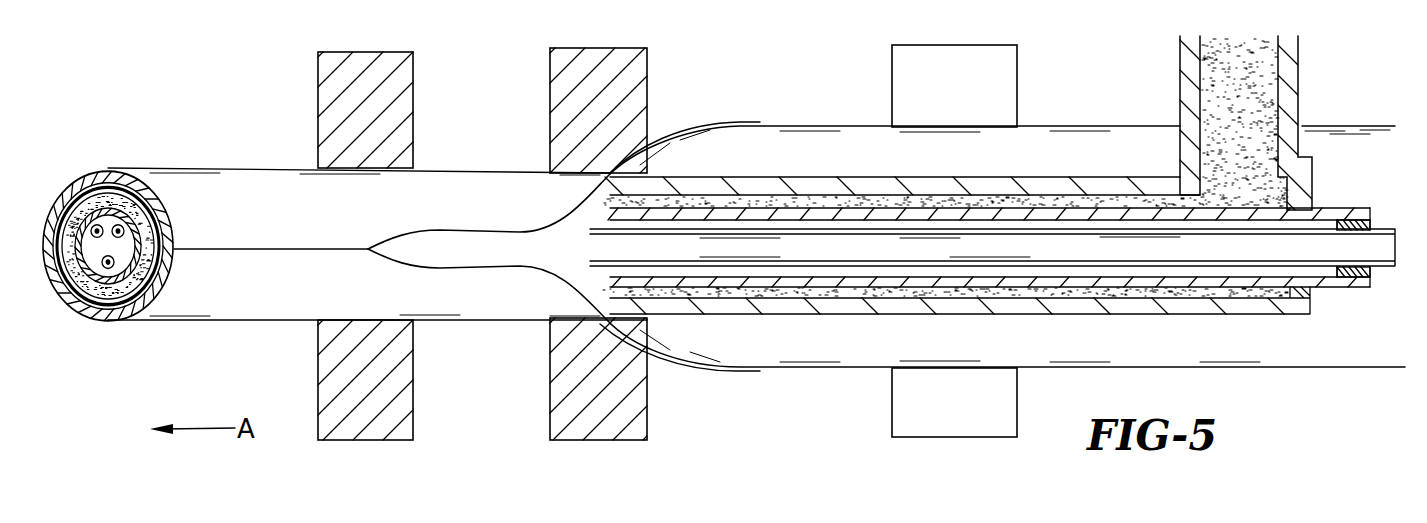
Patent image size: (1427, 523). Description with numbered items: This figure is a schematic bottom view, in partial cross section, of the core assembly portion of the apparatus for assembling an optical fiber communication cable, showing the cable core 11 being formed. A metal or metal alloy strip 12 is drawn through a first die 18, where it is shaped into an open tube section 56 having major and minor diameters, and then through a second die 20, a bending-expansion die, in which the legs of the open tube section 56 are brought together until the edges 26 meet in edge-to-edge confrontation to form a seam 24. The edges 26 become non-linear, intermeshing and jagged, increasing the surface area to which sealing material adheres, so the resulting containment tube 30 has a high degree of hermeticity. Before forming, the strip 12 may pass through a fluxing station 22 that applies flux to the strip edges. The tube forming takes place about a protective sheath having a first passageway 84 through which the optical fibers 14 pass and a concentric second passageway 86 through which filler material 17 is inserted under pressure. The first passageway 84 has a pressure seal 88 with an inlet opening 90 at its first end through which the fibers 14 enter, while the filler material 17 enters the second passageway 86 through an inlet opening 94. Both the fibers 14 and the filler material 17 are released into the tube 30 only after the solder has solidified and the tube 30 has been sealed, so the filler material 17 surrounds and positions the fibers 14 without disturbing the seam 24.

The cable core 11 is at (95, 146).
The metal strip 12 is at (1320, 132).
The optical fibers 14 is at (116, 236).
The filler material 17 is at (127, 287).
The first die 18 is at (647, 55).
The second die 20 is at (413, 60).
The fluxing station 22 is at (1017, 50).
The seam 24 is at (268, 248).
The edges 26 is at (734, 352).
The containment tube 30 is at (196, 168).
The open tube section 56 is at (493, 232).
The first passageway 84 is at (107, 280).
The second passageway 86 is at (78, 188).
The pressure seal 88 is at (1377, 220).
The inlet opening 90 is at (1377, 278).
The inlet opening 94 is at (1215, 50).